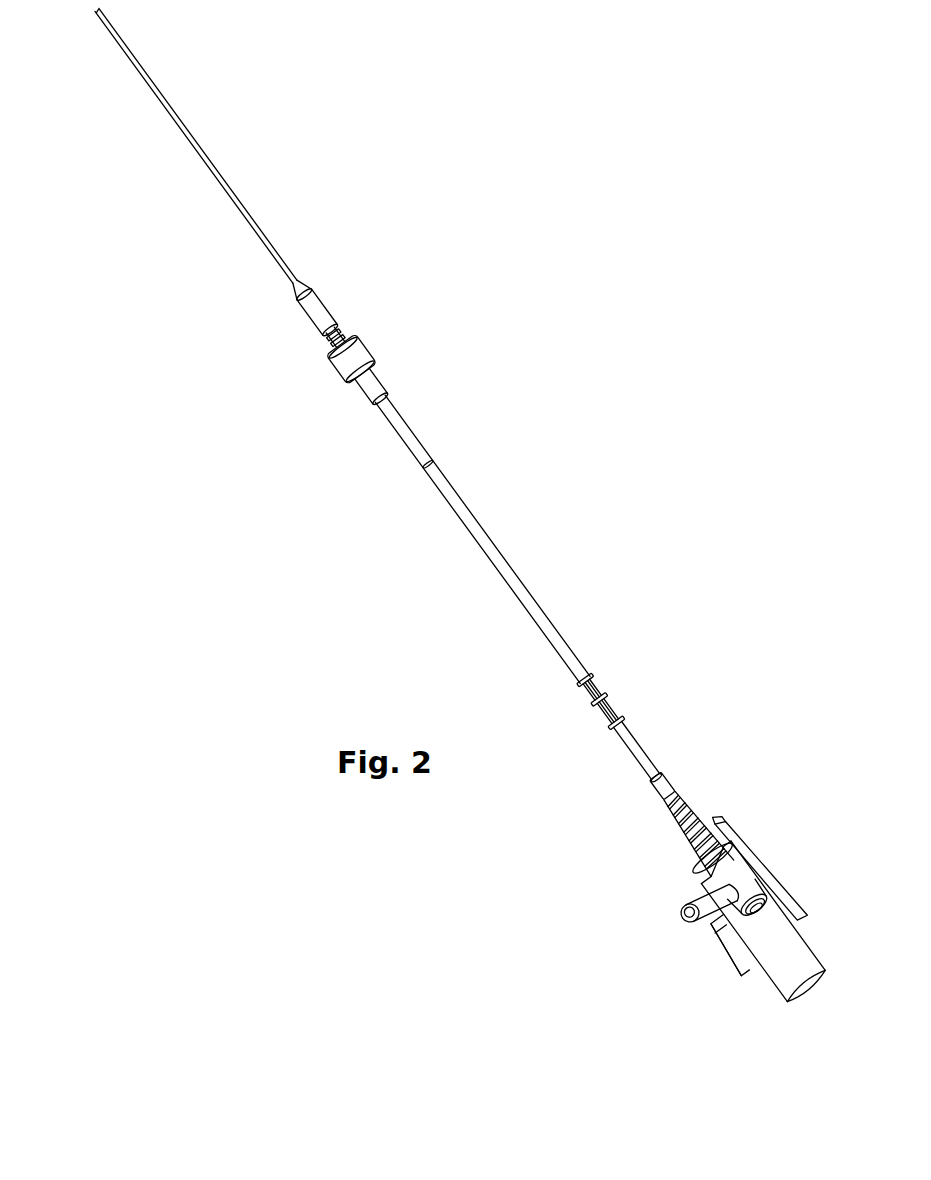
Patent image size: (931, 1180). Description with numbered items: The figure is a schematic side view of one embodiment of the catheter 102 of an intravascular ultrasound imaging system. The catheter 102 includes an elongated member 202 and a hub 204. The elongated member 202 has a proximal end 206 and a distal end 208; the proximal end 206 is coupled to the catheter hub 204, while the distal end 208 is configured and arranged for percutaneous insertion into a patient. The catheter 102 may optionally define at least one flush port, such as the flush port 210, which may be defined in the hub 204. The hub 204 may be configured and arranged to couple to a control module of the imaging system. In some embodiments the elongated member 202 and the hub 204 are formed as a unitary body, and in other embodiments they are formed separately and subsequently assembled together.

The catheter 102 is at (439, 302).
The elongated member 202 is at (233, 457).
The hub 204 is at (806, 789).
The proximal end 206 is at (595, 819).
The distal end 208 is at (90, 59).
The flush port 210 is at (697, 927).